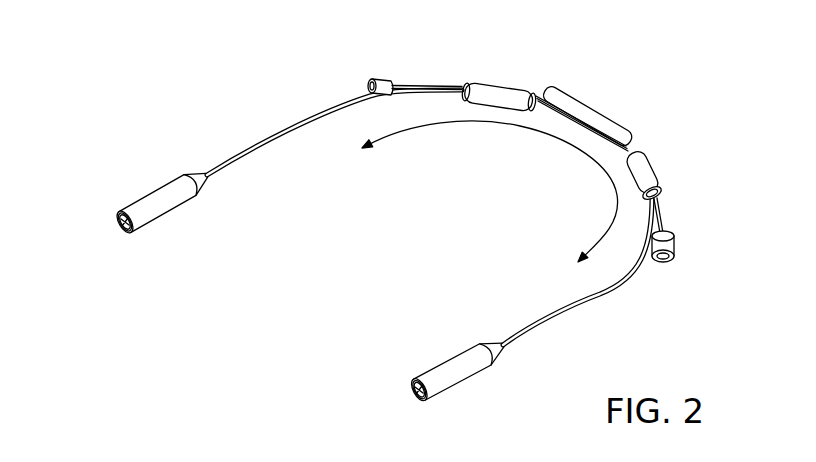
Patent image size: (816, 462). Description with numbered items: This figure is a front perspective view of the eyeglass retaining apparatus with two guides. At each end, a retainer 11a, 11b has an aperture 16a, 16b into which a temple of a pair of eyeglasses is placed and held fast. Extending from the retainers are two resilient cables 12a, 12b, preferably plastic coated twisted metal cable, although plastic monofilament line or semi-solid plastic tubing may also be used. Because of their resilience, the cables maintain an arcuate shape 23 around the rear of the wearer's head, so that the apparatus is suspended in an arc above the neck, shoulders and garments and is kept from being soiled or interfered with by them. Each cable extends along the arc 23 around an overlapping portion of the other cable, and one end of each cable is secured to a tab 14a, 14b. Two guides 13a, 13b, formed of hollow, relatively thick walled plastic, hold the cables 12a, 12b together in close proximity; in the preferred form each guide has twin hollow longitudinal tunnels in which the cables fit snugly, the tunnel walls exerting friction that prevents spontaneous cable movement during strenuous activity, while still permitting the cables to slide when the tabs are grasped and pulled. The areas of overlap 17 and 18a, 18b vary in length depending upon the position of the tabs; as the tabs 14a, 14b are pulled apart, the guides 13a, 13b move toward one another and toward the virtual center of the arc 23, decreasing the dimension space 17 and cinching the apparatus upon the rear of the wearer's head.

The retainer 11a is at (137, 194).
The retainer 11b is at (426, 365).
The cable 12a is at (262, 143).
The cable 12b is at (580, 300).
The guide 13a is at (493, 84).
The guide 13b is at (658, 168).
The tab 14a is at (667, 261).
The tab 14b is at (378, 80).
The aperture 16a is at (118, 228).
The aperture 16b is at (412, 394).
The area of overlap 17 is at (606, 120).
The area of overlap 18a is at (665, 192).
The area of overlap 18b is at (468, 74).
The arcuate shape 23 is at (560, 137).